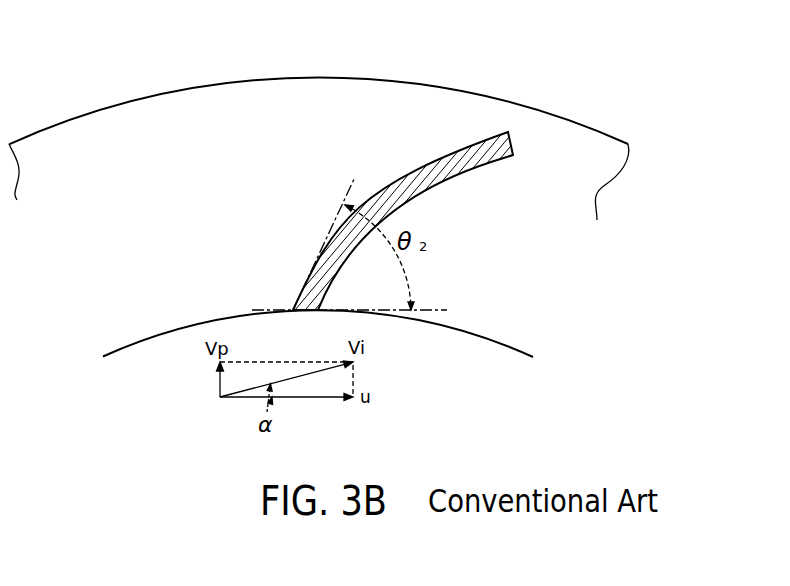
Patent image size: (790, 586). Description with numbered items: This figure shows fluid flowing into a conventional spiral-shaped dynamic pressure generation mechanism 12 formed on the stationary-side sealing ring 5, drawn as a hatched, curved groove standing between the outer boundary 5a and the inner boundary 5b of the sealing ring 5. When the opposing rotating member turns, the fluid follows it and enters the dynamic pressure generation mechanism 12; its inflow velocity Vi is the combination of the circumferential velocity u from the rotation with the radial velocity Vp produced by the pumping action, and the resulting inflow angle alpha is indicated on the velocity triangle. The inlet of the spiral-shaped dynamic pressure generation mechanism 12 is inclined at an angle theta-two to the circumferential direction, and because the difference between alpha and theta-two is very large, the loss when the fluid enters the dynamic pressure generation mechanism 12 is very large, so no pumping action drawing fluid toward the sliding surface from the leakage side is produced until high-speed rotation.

The stationary-side sealing ring 5 is at (518, 103).
The outer peripheral wall of casing 5a is at (97, 110).
The inner peripheral wall (hub side) of casing 5b is at (465, 333).
The conventional spiral-shaped dynamic pressure generation mechanism 12 is at (445, 182).